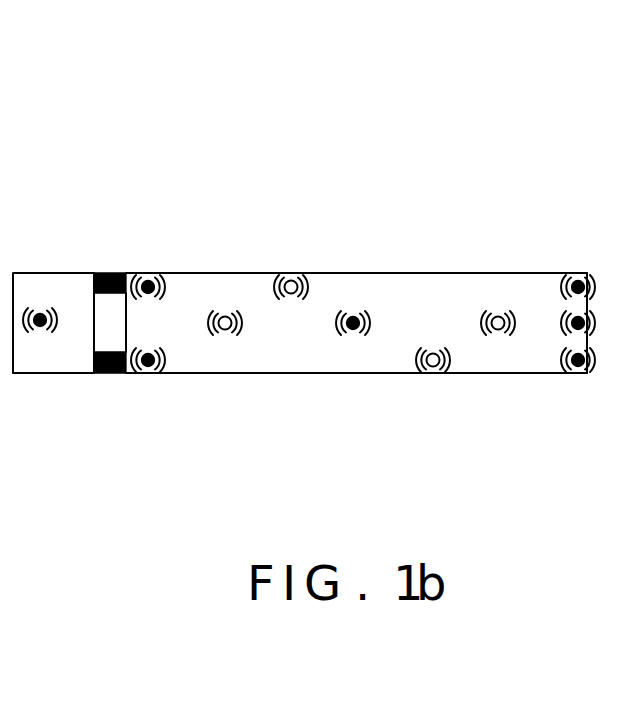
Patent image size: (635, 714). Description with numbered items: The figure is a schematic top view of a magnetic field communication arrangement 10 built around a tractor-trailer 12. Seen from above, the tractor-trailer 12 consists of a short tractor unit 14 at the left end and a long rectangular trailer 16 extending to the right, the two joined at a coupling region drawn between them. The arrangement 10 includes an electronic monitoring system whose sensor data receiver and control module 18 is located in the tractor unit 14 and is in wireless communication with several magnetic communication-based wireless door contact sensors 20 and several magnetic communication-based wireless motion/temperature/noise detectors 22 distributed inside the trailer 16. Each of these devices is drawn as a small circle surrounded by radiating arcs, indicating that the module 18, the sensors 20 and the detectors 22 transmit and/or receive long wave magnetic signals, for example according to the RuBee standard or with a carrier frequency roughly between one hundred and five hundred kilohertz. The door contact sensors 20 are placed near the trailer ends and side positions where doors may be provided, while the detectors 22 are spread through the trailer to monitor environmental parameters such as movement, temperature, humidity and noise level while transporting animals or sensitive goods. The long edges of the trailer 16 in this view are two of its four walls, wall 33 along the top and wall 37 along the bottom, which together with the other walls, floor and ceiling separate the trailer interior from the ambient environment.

The magnetic field communication arrangement 10 is at (540, 113).
The tractor-trailer 12 is at (108, 115).
The tractor unit 14 is at (72, 369).
The trailer 16 is at (447, 307).
The sensor data receiver and control module 18 is at (40, 312).
The magnetic communication-based wireless door contact sensors 20 is at (148, 355).
The magnetic communication-based wireless motion/temperature/noise detectors 22 is at (291, 280).
The wall 33 is at (472, 272).
The wall 37 is at (262, 373).